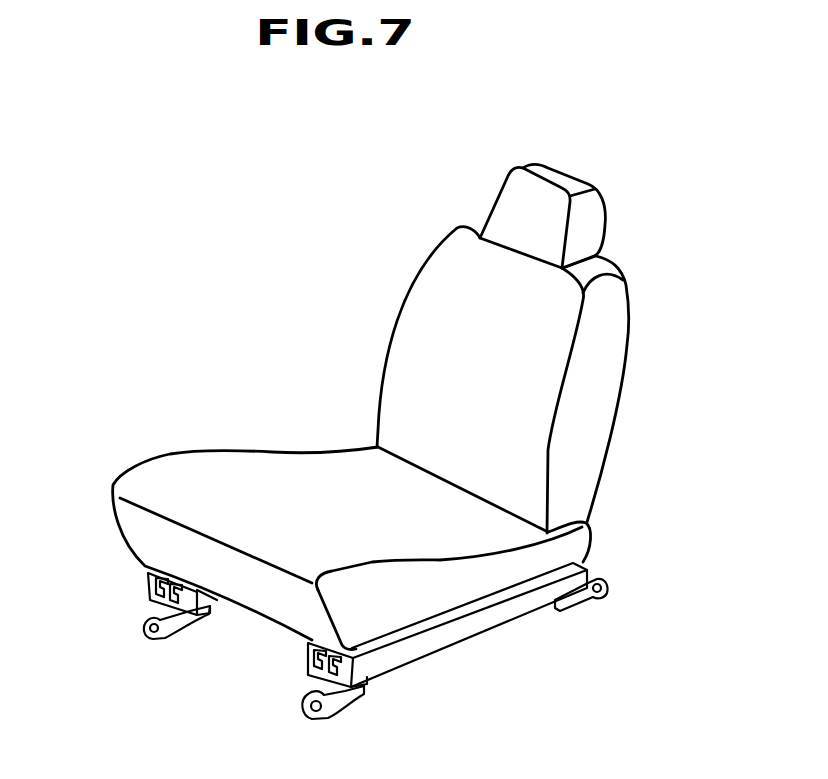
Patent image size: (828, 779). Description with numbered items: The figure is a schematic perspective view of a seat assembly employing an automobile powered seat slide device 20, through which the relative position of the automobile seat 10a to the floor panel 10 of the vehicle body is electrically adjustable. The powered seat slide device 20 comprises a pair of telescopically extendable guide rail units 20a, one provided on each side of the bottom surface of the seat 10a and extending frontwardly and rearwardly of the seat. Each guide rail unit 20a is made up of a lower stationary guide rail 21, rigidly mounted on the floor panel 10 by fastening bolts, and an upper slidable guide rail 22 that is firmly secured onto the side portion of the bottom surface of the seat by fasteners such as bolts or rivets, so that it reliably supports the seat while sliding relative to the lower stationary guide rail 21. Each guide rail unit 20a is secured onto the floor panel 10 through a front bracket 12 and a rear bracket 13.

The floor panel 10 is at (277, 667).
The automobile seat 10a is at (635, 302).
The front bracket 12 is at (237, 686).
The rear bracket 13 is at (607, 597).
The powered seat slide device 20 is at (348, 667).
The telescopically extendable guide rail unit 20a is at (312, 664).
The lower stationary guide rail 21 is at (152, 602).
The upper slidable guide rail 22 is at (393, 663).